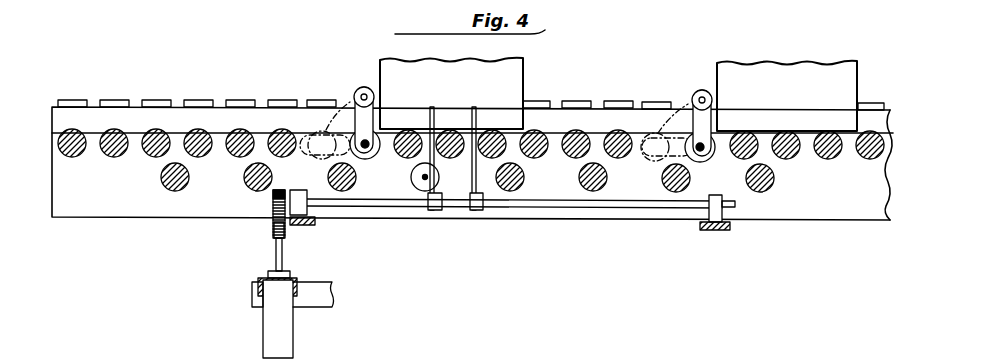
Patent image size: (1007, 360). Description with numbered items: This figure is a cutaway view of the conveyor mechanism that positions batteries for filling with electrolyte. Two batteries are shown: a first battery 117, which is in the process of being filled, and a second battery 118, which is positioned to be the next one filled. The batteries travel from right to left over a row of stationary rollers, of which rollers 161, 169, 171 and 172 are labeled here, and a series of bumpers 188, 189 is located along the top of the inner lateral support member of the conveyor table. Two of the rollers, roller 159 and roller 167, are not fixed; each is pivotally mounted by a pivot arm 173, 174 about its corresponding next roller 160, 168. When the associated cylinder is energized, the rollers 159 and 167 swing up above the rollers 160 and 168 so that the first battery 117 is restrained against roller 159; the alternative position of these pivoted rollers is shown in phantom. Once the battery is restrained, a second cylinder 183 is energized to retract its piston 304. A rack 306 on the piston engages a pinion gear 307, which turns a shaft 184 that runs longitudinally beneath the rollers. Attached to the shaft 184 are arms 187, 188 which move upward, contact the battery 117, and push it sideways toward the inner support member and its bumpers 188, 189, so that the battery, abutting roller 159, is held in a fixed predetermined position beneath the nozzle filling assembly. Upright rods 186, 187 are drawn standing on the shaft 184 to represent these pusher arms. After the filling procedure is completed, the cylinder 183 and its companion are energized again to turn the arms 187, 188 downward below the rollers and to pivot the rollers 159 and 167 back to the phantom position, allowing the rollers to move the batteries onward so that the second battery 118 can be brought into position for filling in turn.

The first battery 117 is at (392, 72).
The second battery 118 is at (768, 80).
The pivotally mounted roller 159 is at (364, 87).
The roller 160 is at (366, 152).
The roller 161 is at (404, 130).
The pivotally mounted roller 167 is at (699, 90).
The roller 168 is at (708, 155).
The roller 169 is at (745, 134).
The roller 171 is at (828, 160).
The roller 172 is at (872, 159).
The pivot arm 173 is at (693, 118).
The pivot arm 174 is at (356, 100).
The second cylinder 183 is at (275, 325).
The shaft 184 is at (628, 204).
The stop rod 186 is at (477, 107).
The arm 187 is at (434, 107).
The arm / bumper 188 is at (72, 102).
The bumper 189 is at (115, 100).
The piston 304 is at (282, 252).
The rack 306 is at (274, 232).
The pinion gear 307 is at (268, 203).